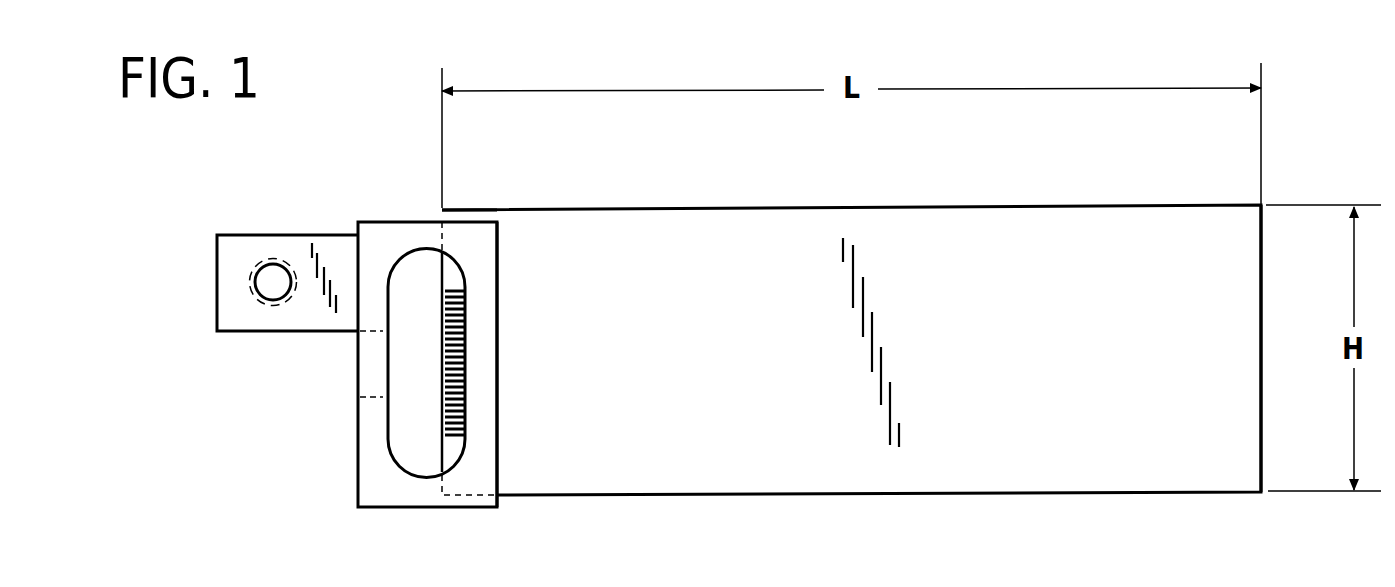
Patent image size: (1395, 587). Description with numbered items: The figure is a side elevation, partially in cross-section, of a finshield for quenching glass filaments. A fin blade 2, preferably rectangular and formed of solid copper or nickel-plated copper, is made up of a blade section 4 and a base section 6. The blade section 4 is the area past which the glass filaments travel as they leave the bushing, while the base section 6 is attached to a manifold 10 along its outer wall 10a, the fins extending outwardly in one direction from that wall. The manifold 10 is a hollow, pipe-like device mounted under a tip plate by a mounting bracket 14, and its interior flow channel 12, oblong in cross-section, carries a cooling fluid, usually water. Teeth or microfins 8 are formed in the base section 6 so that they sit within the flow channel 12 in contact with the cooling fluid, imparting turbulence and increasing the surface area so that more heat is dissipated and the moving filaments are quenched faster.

The fin blade 2 is at (688, 196).
The blade section 4 is at (1073, 240).
The base section 6 is at (451, 273).
The microfins 8 is at (442, 372).
The manifold 10 is at (373, 458).
The outer wall 10a is at (498, 440).
The flow channel 12 is at (430, 336).
The mounting bracket 14 is at (280, 247).